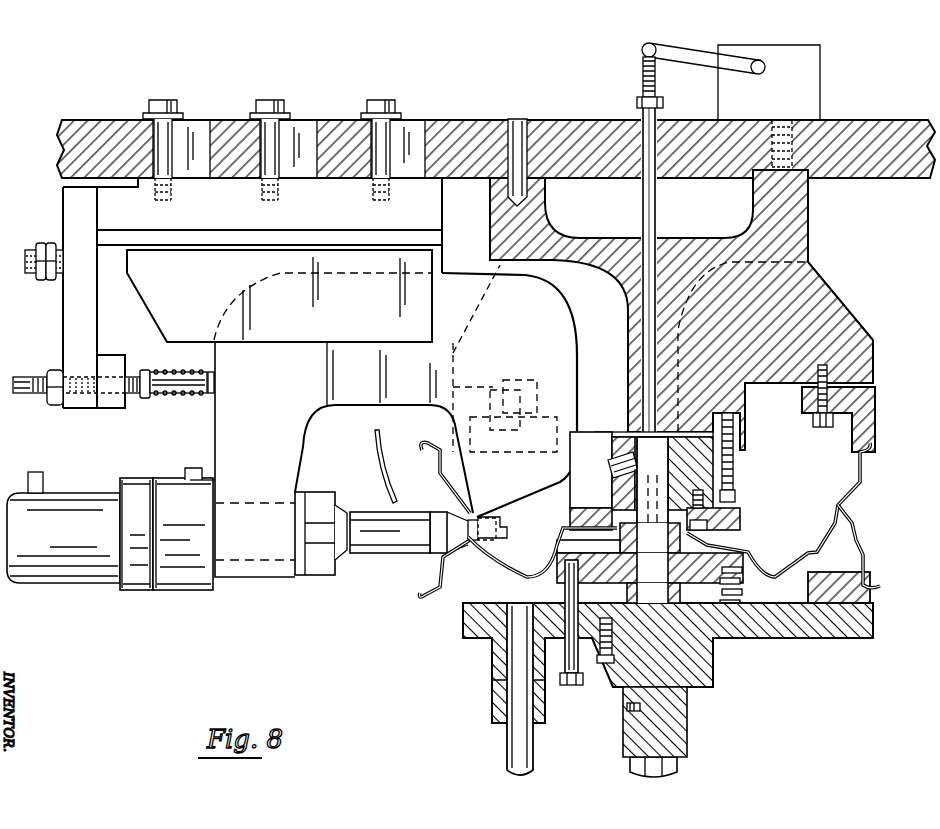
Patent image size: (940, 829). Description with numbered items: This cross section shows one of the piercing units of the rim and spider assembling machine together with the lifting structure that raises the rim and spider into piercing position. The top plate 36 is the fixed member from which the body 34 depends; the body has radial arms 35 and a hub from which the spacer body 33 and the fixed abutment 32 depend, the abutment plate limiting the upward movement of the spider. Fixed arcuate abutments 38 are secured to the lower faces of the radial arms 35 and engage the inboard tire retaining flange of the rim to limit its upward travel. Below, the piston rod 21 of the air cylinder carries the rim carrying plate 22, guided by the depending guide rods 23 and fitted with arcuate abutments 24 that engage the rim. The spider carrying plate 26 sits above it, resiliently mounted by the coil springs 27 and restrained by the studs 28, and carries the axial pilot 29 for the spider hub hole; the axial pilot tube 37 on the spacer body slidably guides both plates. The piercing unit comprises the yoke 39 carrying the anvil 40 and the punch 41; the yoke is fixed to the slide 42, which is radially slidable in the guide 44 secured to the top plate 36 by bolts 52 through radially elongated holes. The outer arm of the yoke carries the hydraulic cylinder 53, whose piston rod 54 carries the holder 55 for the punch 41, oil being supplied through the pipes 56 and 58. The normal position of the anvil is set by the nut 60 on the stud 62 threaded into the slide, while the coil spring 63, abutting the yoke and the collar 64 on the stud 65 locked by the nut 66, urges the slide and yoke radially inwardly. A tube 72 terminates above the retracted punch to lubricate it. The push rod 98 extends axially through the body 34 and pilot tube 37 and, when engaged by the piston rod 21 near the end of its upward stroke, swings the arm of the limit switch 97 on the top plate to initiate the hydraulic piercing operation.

The piston rod 21 is at (678, 764).
The rim carrying plate 22 is at (873, 635).
The depending guide rods 23 is at (512, 760).
The arcuate abutments 24 is at (840, 574).
The spider carrying plate 26 is at (744, 551).
The coil springs 27 is at (742, 597).
The studs 28 is at (563, 675).
The axial pilot 29 is at (620, 547).
The fixed abutment 32 is at (741, 520).
The spacer body 33 is at (742, 480).
The body 34 is at (827, 276).
The radial arms 35 is at (848, 320).
The top plate 36 is at (867, 120).
The axial pilot tube 37 is at (611, 494).
The fixed arcuate abutments 38 is at (878, 425).
The yoke 39 is at (313, 415).
The anvil 40 is at (488, 521).
The punch 41 is at (467, 531).
The slide 42 is at (160, 312).
The guide 44 is at (230, 212).
The bolts 52 is at (177, 104).
The hydraulic cylinder 53 is at (127, 592).
The piston rod 54 is at (373, 552).
The holder 55 is at (446, 511).
The pipes 56 is at (43, 482).
The pipes 58 is at (192, 468).
The nut 60 is at (43, 243).
The stud 62 is at (25, 262).
The coil spring 63 is at (192, 372).
The collar 64 is at (145, 398).
The stud 65 is at (44, 377).
The nut 66 is at (60, 405).
The tube 72 is at (386, 443).
The limit switch 97 is at (818, 72).
The push rod 98 is at (657, 208).